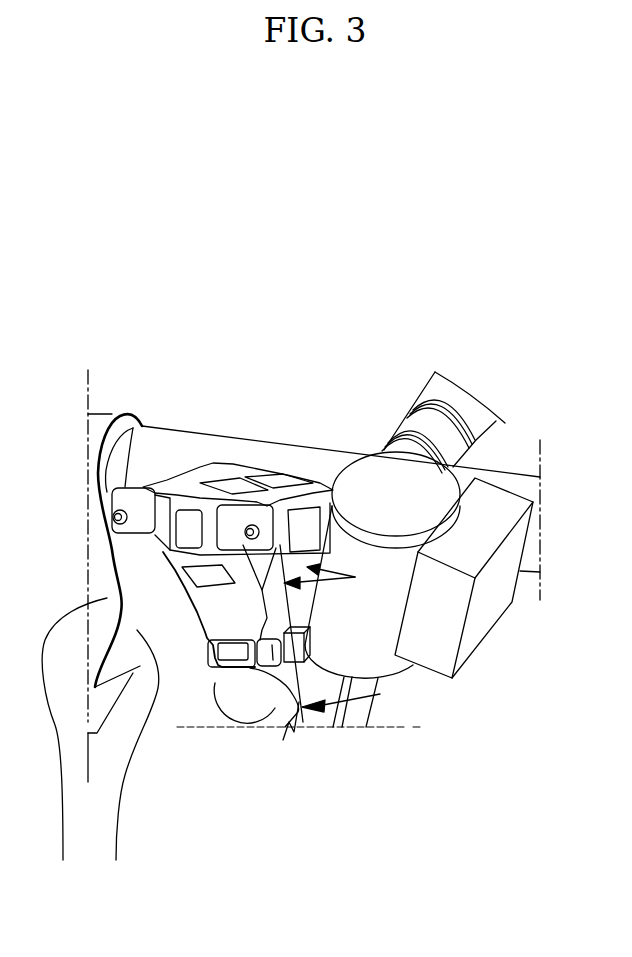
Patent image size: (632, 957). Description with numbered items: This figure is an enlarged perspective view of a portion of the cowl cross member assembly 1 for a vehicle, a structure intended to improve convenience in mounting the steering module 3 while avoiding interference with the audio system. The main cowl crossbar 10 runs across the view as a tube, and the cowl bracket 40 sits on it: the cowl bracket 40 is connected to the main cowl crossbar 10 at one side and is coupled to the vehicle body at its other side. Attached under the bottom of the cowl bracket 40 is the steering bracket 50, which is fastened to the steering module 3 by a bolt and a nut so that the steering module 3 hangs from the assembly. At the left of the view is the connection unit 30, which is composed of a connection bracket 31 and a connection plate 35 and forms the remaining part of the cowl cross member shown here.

The cowl cross member assembly 1 is at (318, 272).
The main cowl crossbar 10 is at (180, 450).
The cowl bracket 40 is at (274, 487).
The steering bracket 50 is at (352, 537).
The steering module 3 is at (256, 700).
The connection unit 30 is at (63, 893).
The connection bracket 31 is at (74, 745).
The connection plate 35 is at (127, 653).